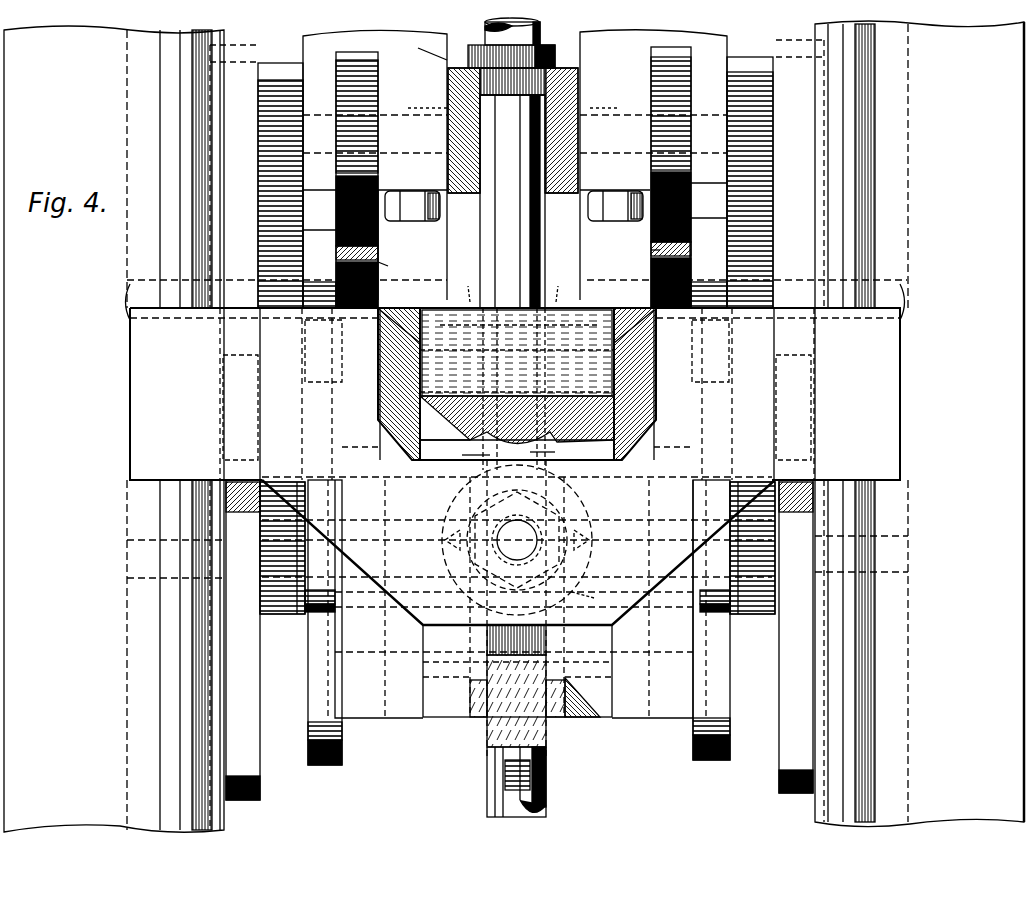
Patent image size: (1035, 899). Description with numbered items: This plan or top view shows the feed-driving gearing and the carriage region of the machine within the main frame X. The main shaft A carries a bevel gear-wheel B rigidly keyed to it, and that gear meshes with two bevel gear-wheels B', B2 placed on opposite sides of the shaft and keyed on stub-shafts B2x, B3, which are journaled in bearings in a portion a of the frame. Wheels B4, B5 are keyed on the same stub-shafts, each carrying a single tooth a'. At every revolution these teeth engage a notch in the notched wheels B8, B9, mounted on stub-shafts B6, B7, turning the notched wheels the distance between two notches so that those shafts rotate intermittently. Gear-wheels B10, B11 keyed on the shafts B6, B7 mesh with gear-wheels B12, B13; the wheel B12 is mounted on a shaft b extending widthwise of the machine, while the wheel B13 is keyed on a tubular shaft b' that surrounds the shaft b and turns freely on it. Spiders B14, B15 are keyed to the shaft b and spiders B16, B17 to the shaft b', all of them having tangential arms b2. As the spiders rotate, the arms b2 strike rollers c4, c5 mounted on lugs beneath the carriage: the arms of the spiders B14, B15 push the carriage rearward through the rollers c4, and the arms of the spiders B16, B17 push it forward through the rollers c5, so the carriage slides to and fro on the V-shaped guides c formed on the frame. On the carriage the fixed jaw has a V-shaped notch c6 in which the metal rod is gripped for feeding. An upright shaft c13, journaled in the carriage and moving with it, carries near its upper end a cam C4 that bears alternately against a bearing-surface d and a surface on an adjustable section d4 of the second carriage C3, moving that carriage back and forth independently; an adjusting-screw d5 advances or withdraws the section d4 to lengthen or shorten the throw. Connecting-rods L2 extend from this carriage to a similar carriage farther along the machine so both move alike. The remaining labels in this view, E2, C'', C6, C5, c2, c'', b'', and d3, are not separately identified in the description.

The main frame X is at (514, 426).
The V-shaped guides c is at (514, 435).
The shaft b is at (517, 435).
The portion of main frame a is at (515, 165).
The tooth a' is at (624, 72).
The bevel gear-wheel B is at (420, 50).
The stub-shaft B2x is at (425, 104).
The stub-shaft B3 is at (606, 104).
The connecting-rods L2 is at (499, 182).
The rack E2 is at (787, 226).
The single-tooth wheel B4 is at (357, 180).
The single-tooth wheel B5 is at (651, 177).
The gear-wheel B10 is at (318, 233).
The gear-wheel B11 is at (708, 213).
The stub-shaft B6 is at (319, 283).
The stub-shaft B7 is at (709, 280).
The notched wheel B8 is at (394, 263).
The notched wheel B9 is at (638, 251).
The bevel gear-wheel B' is at (513, 141).
The bevel gear-wheel B2 is at (562, 141).
The main shaft A is at (566, 796).
The housing C'' is at (517, 389).
The housing part C6 is at (456, 361).
The housing part C5 is at (570, 365).
The housing part c2 is at (463, 285).
The V-shaped notch c6 is at (553, 286).
The rollers c5 is at (517, 351).
The rollers c4 is at (517, 407).
The bearing-surface d is at (468, 455).
The cam C4 is at (553, 453).
The bearing ring c'' is at (503, 540).
The upright shaft c13 is at (593, 599).
The tubular shaft b' is at (666, 513).
The bearing part b'' is at (524, 608).
The adjustable section d4 is at (516, 640).
The plug d3 is at (535, 675).
The second carriage C3 is at (513, 663).
The adjusting-screw d5 is at (510, 776).
The gear-wheel B12 is at (294, 608).
The gear-wheel B13 is at (764, 606).
The spider B14 is at (243, 640).
The spider B15 is at (794, 636).
The spider B16 is at (317, 622).
The spider B17 is at (711, 620).
The tangential arms b2 is at (515, 616).